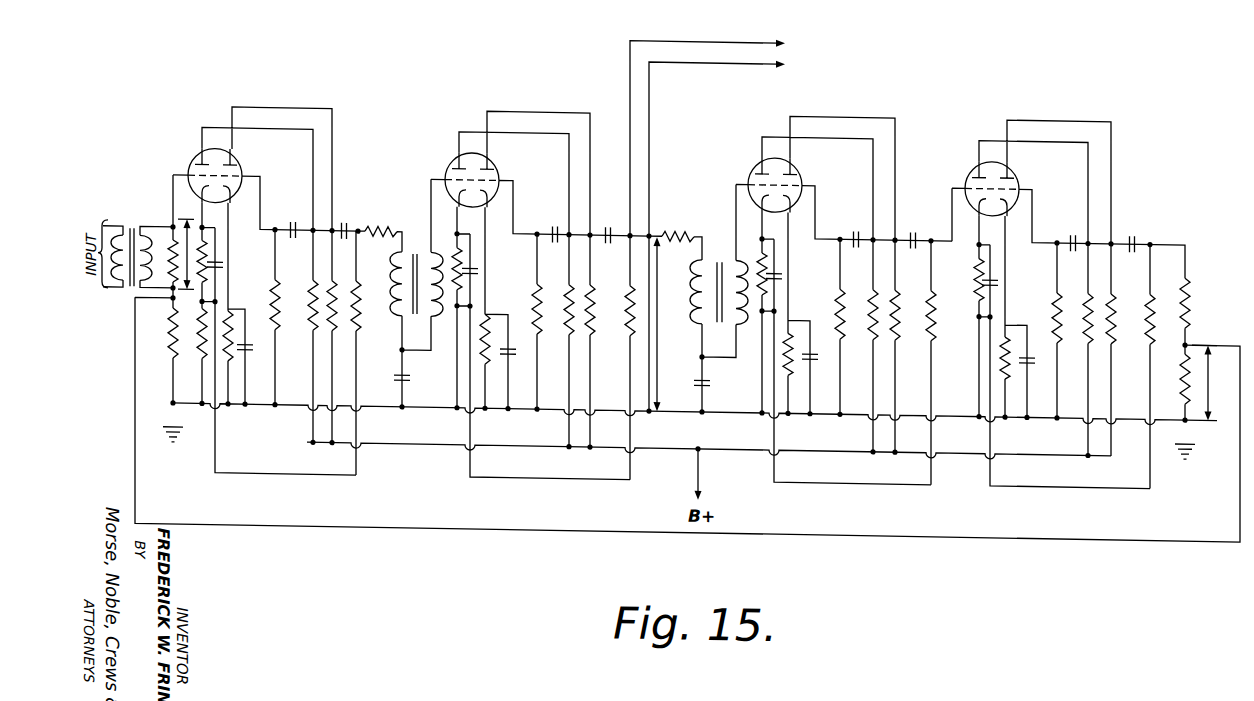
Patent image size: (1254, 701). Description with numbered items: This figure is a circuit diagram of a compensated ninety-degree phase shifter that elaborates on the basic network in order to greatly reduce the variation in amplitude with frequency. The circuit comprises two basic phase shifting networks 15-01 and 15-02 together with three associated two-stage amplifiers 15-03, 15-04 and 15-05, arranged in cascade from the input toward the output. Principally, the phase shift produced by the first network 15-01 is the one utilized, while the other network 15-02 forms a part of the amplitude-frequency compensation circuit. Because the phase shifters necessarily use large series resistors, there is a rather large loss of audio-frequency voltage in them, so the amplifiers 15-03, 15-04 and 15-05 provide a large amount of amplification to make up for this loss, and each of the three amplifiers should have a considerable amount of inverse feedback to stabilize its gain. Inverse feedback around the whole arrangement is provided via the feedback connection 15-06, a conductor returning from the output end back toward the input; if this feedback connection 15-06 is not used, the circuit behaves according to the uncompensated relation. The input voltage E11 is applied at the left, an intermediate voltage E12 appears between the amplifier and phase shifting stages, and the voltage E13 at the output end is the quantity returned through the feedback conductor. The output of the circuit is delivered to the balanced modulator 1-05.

The basic phase shifting network 15-01 is at (430, 214).
The basic phase shifting network 15-02 is at (732, 215).
The two-stage amplifier 15-03 is at (345, 103).
The two-stage amplifier 15-04 is at (605, 103).
The two-stage amplifier 15-05 is at (1143, 103).
The feedback connection 15-06 is at (768, 527).
The balanced modulator 1-05 is at (789, 57).
The input voltage E11 is at (182, 254).
The intermediate voltage E12 is at (660, 324).
The feedback voltage E13 is at (1207, 383).